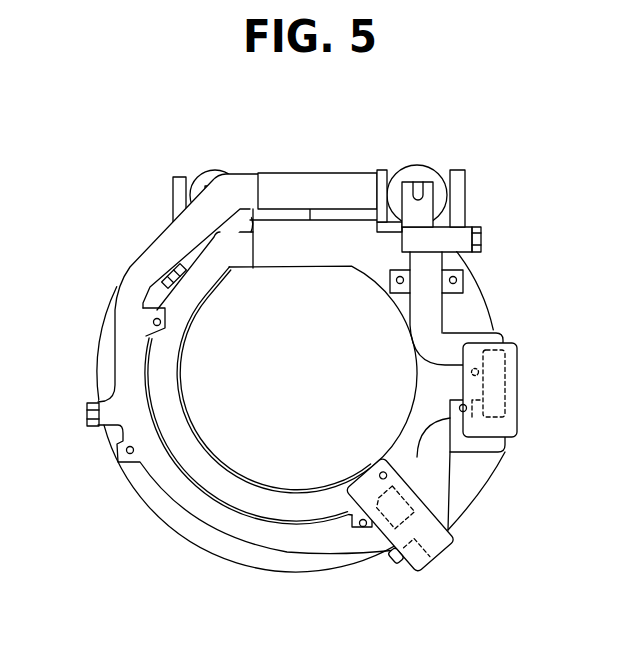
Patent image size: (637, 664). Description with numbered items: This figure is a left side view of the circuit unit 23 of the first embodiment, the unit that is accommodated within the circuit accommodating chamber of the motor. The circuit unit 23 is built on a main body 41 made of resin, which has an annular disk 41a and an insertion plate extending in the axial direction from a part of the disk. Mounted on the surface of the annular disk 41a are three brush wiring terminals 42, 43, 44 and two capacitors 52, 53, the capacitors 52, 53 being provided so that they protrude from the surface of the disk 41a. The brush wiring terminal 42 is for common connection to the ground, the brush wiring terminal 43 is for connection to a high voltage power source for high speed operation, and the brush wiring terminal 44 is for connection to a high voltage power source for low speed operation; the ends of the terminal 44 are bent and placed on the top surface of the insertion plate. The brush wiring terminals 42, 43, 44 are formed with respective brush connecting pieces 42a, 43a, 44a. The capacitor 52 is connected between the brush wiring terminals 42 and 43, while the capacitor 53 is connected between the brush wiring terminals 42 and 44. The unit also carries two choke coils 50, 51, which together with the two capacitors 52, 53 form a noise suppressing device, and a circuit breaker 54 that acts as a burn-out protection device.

The circuit unit 23 is at (301, 372).
The main body 41 is at (333, 446).
The annular disk 41a is at (290, 574).
The brush wiring terminal 42 is at (203, 371).
The brush connecting piece 42a is at (87, 412).
The brush wiring terminal 43 is at (265, 362).
The brush connecting piece 43a is at (181, 288).
The brush wiring terminal 44 is at (402, 337).
The brush connecting piece 44a is at (483, 238).
The choke coil 50 is at (217, 170).
The choke coil 51 is at (421, 165).
The capacitor 52 is at (407, 575).
The capacitor 53 is at (520, 390).
The circuit breaker 54 is at (324, 172).